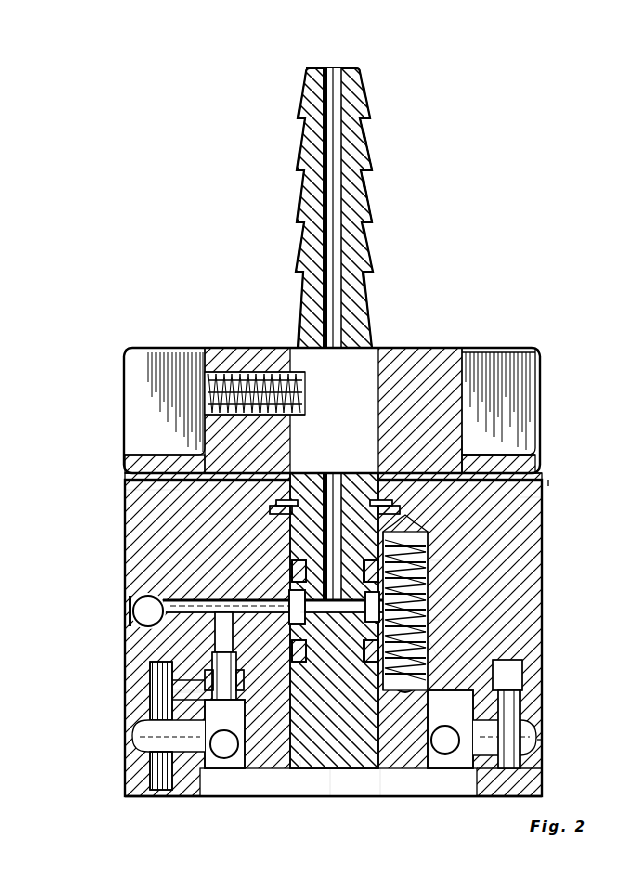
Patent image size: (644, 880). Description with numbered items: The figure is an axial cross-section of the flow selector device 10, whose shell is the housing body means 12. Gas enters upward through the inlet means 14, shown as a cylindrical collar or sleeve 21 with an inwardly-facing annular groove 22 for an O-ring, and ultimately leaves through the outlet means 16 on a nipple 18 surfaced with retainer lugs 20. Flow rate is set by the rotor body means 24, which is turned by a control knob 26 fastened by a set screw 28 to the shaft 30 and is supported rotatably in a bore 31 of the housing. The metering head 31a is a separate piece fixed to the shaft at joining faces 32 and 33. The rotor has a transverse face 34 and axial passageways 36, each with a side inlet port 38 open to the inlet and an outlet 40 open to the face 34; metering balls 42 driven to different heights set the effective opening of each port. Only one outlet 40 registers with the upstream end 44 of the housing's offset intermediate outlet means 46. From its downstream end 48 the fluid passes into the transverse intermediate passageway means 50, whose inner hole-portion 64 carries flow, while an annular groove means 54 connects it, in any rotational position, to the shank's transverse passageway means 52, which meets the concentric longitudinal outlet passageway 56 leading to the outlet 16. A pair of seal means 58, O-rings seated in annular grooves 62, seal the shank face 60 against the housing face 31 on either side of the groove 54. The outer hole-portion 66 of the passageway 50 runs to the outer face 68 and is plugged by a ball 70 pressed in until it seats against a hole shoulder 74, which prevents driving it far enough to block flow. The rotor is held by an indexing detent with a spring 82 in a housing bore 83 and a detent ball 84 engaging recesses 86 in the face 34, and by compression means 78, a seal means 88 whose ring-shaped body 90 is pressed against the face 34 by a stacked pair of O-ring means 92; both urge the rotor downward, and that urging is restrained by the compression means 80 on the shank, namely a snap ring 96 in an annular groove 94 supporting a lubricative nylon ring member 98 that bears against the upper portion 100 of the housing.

The flow selector device 10 is at (556, 474).
The housing body means 12 is at (552, 556).
The inlet means 14 is at (190, 790).
The outlet means 16 is at (338, 68).
The nipple 18 is at (372, 183).
The retainer lugs 20 is at (372, 209).
The cylindrical collar or sleeve 21 is at (543, 770).
The inwardly-facing annular groove 22 is at (543, 745).
The rotor body means 24 is at (366, 420).
The control knob 26 is at (541, 368).
The set screw 28 is at (262, 384).
The shaft 30 is at (340, 770).
The bore 31 is at (224, 640).
The metering head 31a is at (521, 710).
The joining face 32 is at (360, 770).
The joining face 33 is at (385, 770).
The transversely extending face 34 is at (440, 665).
The passageways 36 is at (220, 770).
The side inlet port 38 is at (130, 750).
The outlet 40 is at (132, 738).
The metering balls 42 is at (222, 748).
The upstream end 44 is at (212, 690).
The intermediate outlet means 46 is at (150, 670).
The downstream end 48 is at (290, 595).
The intermediate passageway means 50 is at (172, 690).
The shank means' intermediate passageway means 52 is at (430, 580).
The annular groove means 54 is at (430, 600).
The outlet passageway 56 is at (336, 310).
The seal means 58 is at (300, 612).
The face 60 is at (300, 597).
The annular groove 62 is at (300, 770).
The inner hole-portion 64 is at (222, 614).
The hole-portion 66 is at (126, 602).
The outer face 68 is at (126, 492).
The ball 70 is at (132, 612).
The hole shoulder 74 is at (130, 626).
The compression means 78 is at (75, 697).
The compression means 80 is at (492, 378).
The spring 82 is at (440, 605).
The housing bore 83 is at (430, 560).
The detent ball 84 is at (440, 630).
The recesses 86 is at (310, 770).
The seal means 88 is at (75, 699).
The ring-shaped body 90 is at (205, 680).
The O-ring means 92 is at (265, 770).
The annular groove 94 is at (282, 500).
The snap ring 96 is at (464, 445).
The lubricative ring member 98 is at (470, 457).
The upper portion of the housing body 100 is at (530, 498).